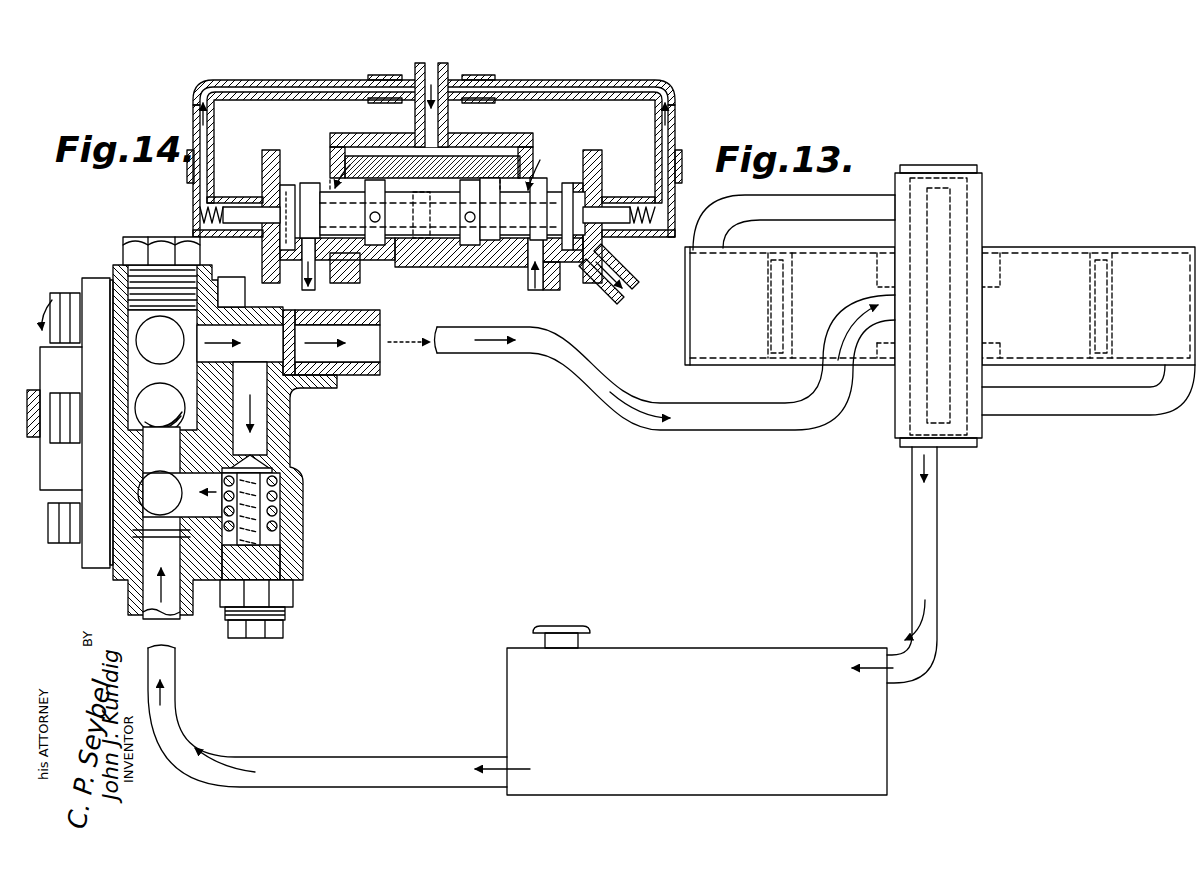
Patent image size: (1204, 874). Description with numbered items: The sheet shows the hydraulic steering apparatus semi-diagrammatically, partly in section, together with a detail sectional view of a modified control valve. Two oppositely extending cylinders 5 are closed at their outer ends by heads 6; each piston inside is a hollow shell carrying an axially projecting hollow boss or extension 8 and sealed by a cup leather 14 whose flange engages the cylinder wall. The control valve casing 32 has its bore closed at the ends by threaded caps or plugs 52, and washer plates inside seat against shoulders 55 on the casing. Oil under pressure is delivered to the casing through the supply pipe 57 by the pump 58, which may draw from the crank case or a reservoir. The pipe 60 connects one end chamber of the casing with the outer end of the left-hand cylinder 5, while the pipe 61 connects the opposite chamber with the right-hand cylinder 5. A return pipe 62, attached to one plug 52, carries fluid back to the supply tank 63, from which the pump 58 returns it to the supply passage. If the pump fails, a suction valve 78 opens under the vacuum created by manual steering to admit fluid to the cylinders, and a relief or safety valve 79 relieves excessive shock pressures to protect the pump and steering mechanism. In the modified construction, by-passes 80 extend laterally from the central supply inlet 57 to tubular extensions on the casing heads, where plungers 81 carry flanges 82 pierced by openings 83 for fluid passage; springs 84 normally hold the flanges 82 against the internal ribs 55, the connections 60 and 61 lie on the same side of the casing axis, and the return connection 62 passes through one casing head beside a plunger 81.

In FIG. 13, the cylinder 5 is at (939, 313).
In FIG. 13, the head 6 is at (686, 305).
In FIG. 13, the hollow boss or extension 8 is at (884, 268).
In FIG. 13, the cup leather 14 is at (793, 302).
In FIG. 13, the control valve casing 32 is at (983, 208).
In FIG. 13, the threaded cap or plug 52 is at (958, 165).
In FIG. 14, the shoulder 55 is at (551, 178).
In FIG. 14, the supply pipe 57 is at (448, 73).
In FIG. 13, the supply pipe 57 is at (468, 350).
In FIG. 14, the pump 58 is at (70, 419).
In FIG. 14, the pipe 60 is at (340, 284).
In FIG. 13, the pipe 60 is at (1088, 391).
In FIG. 14, the pipe 61 is at (530, 283).
In FIG. 13, the pipe 61 is at (794, 221).
In FIG. 14, the return pipe 62 is at (609, 276).
In FIG. 13, the return pipe 62 is at (958, 534).
In FIG. 13, the supply tank 63 is at (517, 710).
In FIG. 14, the suction valve 78 is at (154, 392).
In FIG. 14, the relief or safety valve 79 is at (265, 466).
In FIG. 14, the by-pass 80 is at (307, 90).
In FIG. 14, the plunger 81 is at (615, 192).
In FIG. 14, the flange 82 is at (287, 212).
In FIG. 14, the opening 83 is at (288, 172).
In FIG. 14, the spring 84 is at (199, 214).